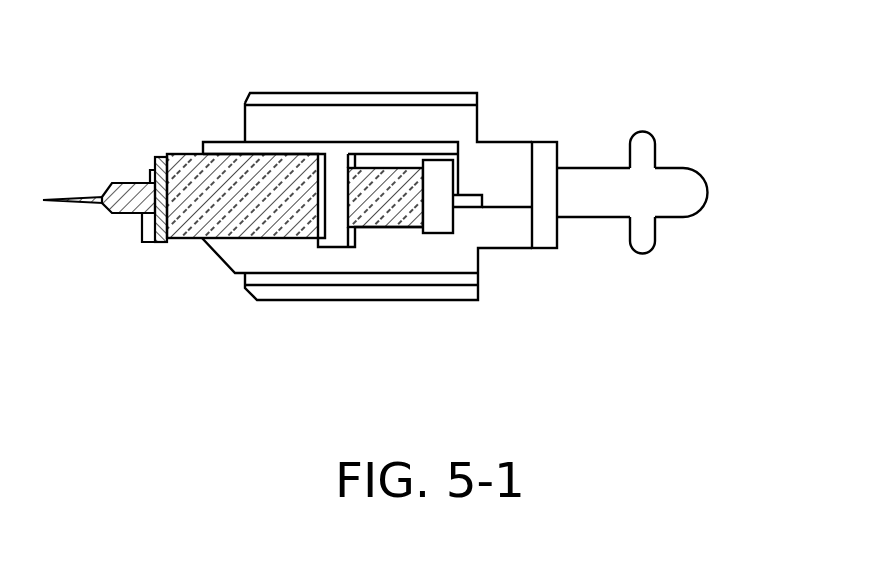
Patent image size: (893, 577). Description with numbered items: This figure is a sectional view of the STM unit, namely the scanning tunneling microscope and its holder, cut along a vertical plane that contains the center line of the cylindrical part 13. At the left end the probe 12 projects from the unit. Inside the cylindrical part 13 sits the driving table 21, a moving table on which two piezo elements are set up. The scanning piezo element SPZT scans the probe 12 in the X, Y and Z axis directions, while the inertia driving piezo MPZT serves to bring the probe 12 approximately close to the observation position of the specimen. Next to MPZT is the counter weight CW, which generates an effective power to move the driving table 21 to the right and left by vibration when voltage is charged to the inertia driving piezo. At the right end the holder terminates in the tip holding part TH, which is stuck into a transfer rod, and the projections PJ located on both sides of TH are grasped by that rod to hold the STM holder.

The probe 12 is at (72, 197).
The cylindrical part 13 is at (400, 93).
The driving table 21 is at (327, 139).
The scanning piezo element SPZT is at (243, 203).
The inertia driving piezo MPZT is at (375, 197).
The counter weight CW is at (442, 235).
The tip holding part TH is at (597, 168).
The projections PJ is at (645, 148).